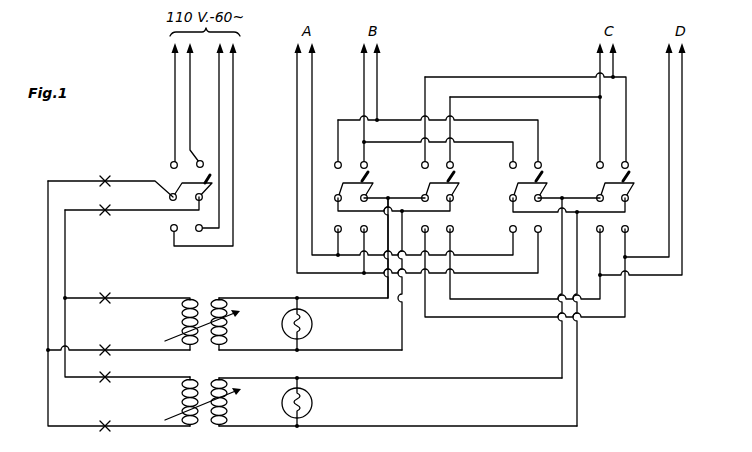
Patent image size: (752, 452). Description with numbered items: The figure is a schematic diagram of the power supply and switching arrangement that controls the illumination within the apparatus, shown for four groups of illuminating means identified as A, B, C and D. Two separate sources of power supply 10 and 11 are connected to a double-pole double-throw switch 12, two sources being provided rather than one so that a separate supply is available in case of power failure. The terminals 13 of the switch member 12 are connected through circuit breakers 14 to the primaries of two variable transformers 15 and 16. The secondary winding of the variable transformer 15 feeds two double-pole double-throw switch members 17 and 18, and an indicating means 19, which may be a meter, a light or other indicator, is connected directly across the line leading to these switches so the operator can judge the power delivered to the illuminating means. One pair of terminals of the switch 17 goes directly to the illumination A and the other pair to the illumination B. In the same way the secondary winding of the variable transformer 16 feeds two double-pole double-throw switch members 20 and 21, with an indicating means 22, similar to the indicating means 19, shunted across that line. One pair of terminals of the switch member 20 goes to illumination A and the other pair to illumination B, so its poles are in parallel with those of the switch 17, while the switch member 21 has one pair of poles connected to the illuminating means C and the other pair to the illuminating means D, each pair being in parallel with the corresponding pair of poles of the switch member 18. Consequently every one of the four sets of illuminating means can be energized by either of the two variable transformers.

The source of power supply 10 is at (233, 67).
The source of power supply 11 is at (175, 68).
The double-pole double-throw switch 12 is at (172, 182).
The terminals of the switch member 13 is at (203, 200).
The circuit breakers 14 is at (109, 205).
The variable transformer 15 is at (181, 322).
The variable transformer 16 is at (181, 399).
The double-pole double-throw switch member 17 is at (374, 189).
The double-pole double-throw switch member 18 is at (456, 194).
The indicating means 19 is at (314, 324).
The double-pole double-throw switch member 20 is at (547, 189).
The double-pole double-throw switch member 21 is at (629, 195).
The indicating means 22 is at (314, 403).